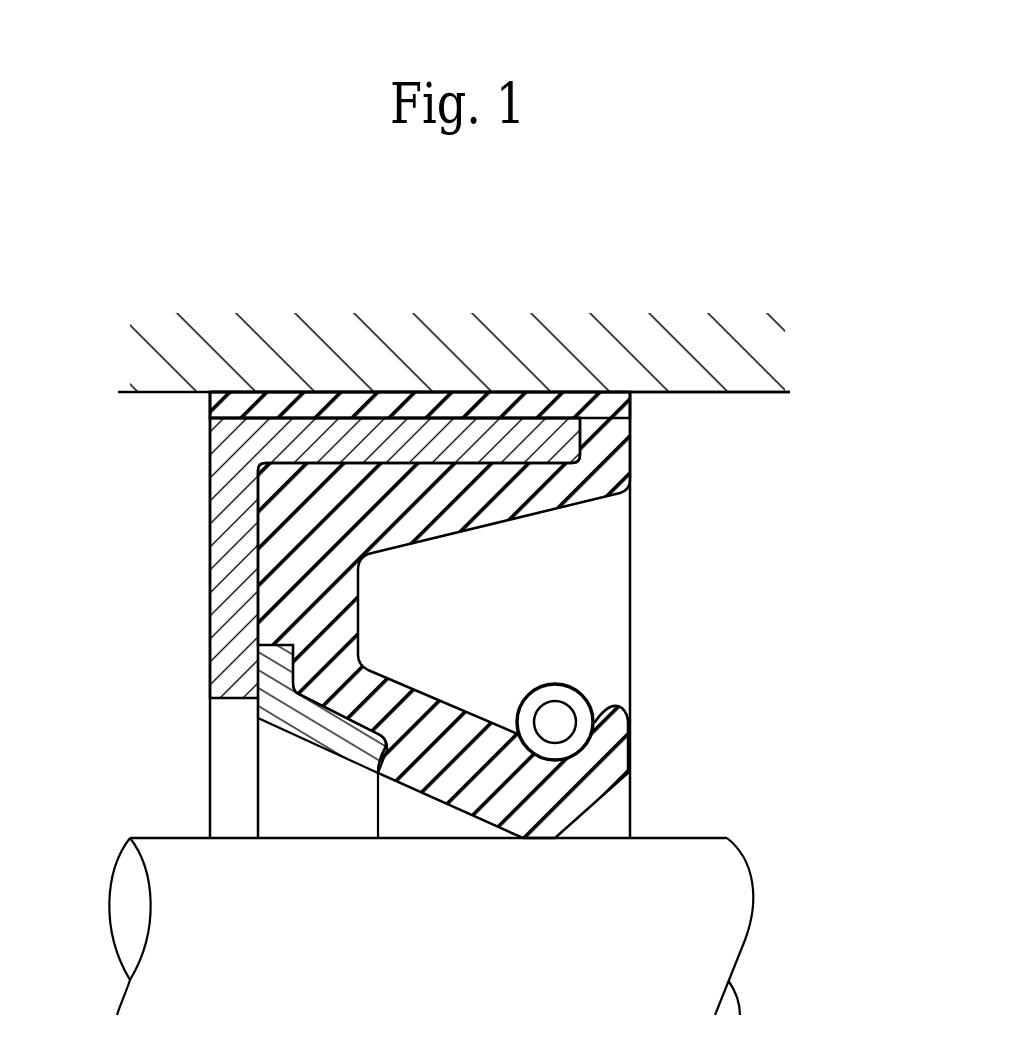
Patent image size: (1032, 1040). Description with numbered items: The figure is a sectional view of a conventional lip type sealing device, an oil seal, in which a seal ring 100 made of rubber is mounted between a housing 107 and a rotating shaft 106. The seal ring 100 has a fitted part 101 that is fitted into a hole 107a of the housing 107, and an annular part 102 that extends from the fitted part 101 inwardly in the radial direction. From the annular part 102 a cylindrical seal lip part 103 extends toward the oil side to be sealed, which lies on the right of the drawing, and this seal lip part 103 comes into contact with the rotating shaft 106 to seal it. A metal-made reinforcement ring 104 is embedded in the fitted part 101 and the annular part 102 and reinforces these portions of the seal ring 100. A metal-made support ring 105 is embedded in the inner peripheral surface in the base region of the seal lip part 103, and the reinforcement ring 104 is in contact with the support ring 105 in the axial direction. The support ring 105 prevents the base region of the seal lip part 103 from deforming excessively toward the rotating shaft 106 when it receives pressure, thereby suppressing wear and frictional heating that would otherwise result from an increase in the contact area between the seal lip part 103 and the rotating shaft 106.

The seal ring 100 is at (655, 456).
The fitted part 101 is at (400, 400).
The annular part 102 is at (290, 588).
The seal lip part 103 is at (417, 717).
The reinforcement ring 104 is at (230, 528).
The support ring 105 is at (327, 745).
The rotating shaft 106 is at (753, 903).
The housing 107 is at (407, 328).
The hole 107a is at (733, 392).